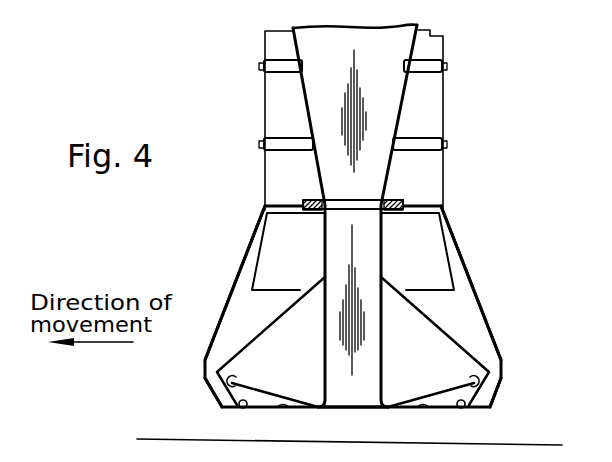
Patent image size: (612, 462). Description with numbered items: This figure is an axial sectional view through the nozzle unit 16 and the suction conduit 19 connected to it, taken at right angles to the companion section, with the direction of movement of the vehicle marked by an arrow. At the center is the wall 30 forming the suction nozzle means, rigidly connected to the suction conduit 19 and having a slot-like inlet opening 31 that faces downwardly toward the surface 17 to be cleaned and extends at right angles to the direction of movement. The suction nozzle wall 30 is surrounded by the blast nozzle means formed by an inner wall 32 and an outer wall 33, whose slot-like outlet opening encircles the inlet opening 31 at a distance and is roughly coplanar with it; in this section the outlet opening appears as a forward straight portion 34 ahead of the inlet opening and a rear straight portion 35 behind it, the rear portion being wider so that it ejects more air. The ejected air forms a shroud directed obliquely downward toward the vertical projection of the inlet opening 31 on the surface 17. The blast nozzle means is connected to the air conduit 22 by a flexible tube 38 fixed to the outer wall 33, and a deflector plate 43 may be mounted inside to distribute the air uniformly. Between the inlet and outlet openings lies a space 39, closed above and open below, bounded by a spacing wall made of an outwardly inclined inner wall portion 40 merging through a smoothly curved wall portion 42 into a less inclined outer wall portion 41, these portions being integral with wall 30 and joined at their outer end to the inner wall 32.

The nozzle unit 16 is at (232, 270).
The surface to be cleaned 17 is at (539, 441).
The suction conduit 19 is at (420, 46).
The conduit 22 is at (272, 44).
The wall 30 is at (313, 238).
The inlet opening 31 is at (355, 401).
The inner wall 32 is at (284, 317).
The outer wall 33 is at (214, 319).
The forward straight portion 34 is at (226, 410).
The rear straight portion 35 is at (470, 410).
The flexible tube 38 is at (435, 111).
The space 39 is at (285, 408).
The inner wall portion 40 is at (276, 396).
The outer wall portion 41 is at (245, 408).
The smoothly curved wall portion 42 is at (233, 376).
The deflector plate 43 is at (430, 252).